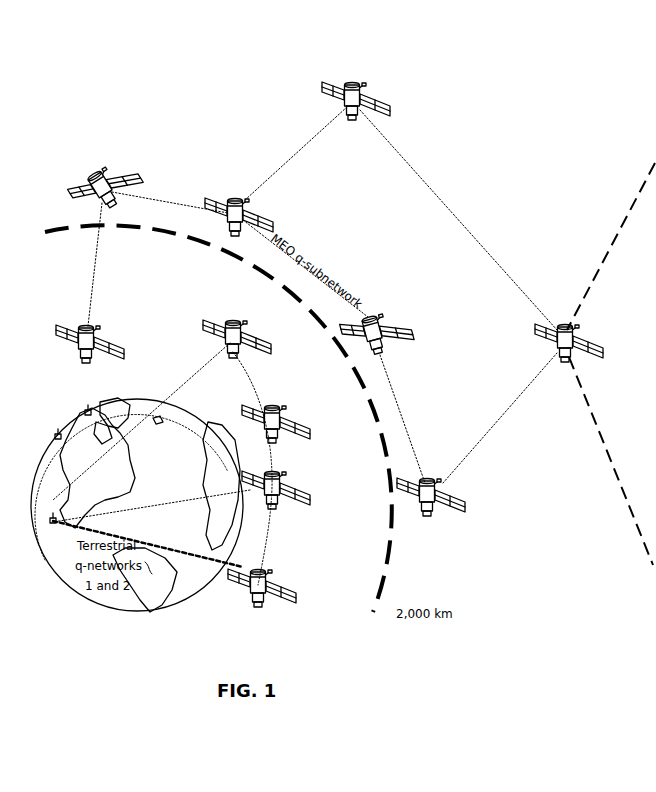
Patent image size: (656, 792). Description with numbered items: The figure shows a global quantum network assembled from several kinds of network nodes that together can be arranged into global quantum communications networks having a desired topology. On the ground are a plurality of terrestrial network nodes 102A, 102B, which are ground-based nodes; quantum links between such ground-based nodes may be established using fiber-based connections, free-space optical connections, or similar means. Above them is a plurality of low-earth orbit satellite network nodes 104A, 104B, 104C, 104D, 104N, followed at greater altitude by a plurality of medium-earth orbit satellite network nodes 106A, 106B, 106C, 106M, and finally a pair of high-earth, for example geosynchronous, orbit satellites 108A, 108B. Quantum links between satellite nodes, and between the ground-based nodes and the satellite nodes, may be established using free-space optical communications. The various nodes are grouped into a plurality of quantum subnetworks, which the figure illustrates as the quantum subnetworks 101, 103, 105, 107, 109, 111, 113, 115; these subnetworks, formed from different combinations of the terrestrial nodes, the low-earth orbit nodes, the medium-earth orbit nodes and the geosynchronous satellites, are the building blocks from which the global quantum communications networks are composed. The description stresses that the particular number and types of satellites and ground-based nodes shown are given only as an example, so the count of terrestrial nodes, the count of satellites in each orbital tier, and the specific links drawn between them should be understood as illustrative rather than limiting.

The quantum subnetwork 101 is at (236, 555).
The terrestrial network node 102A is at (58, 437).
The terrestrial network node 102B is at (89, 413).
The quantum subnetwork 103 is at (268, 542).
The low-earth orbit satellite network node 104A is at (103, 325).
The low-earth orbit satellite network node 104B is at (231, 318).
The low-earth orbit satellite network node 104C is at (284, 438).
The low-earth orbit satellite network node 104D is at (284, 507).
The low-earth orbit satellite network node 104N is at (270, 598).
The quantum subnetwork 105 is at (235, 463).
The medium-earth orbit satellite network node 106A is at (91, 165).
The medium-earth orbit satellite network node 106B is at (227, 195).
The medium-earth orbit satellite network node 106C is at (378, 308).
The medium-earth orbit satellite network node 106M is at (440, 512).
The quantum subnetwork 107 is at (187, 377).
The high-earth orbit satellite 108A is at (352, 82).
The high-earth orbit satellite 108B is at (548, 341).
The quantum subnetwork 109 is at (100, 209).
The quantum subnetwork 111 is at (401, 397).
The quantum subnetwork 113 is at (543, 367).
The quantum subnetwork 115 is at (528, 295).